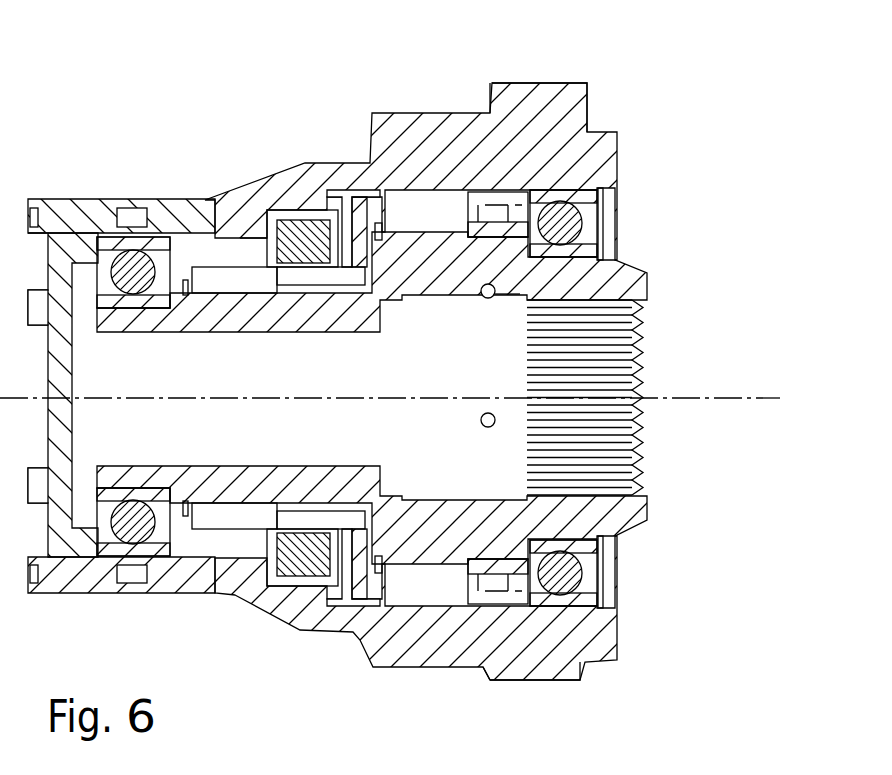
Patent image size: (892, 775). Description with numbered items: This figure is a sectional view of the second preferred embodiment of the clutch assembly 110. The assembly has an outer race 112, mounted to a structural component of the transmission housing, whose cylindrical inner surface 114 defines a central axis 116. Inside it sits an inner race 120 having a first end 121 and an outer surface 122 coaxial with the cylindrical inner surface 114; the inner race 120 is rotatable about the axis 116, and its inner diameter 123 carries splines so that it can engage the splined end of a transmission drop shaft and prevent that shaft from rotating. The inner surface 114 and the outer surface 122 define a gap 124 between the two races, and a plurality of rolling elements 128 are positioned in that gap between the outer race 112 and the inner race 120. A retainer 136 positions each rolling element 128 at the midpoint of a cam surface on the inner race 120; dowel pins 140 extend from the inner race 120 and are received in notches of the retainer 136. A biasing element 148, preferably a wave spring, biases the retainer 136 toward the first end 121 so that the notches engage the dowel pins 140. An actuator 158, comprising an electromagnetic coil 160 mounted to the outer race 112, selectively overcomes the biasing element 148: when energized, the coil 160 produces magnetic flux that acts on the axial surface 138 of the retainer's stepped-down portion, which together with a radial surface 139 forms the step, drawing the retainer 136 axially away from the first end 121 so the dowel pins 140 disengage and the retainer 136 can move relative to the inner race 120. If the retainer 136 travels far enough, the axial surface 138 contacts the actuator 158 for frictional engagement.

The clutch assembly 110 is at (660, 650).
The outer race 112 is at (603, 157).
The cylindrical inner surface 114 is at (593, 90).
The central axis 116 is at (727, 400).
The inner race 120 is at (623, 270).
The first end 121 is at (647, 515).
The outer surface 122 is at (590, 563).
The inner diameter 123 is at (633, 475).
The gap 124 is at (368, 195).
The rolling elements 128 is at (410, 207).
The retainer 136 is at (357, 595).
The axial surface 138 is at (338, 258).
The radial surface 139 is at (259, 236).
The dowel pins 140 is at (495, 413).
The biasing element 148 is at (220, 278).
The actuator 158 is at (219, 217).
The electromagnetic coil 160 is at (240, 593).